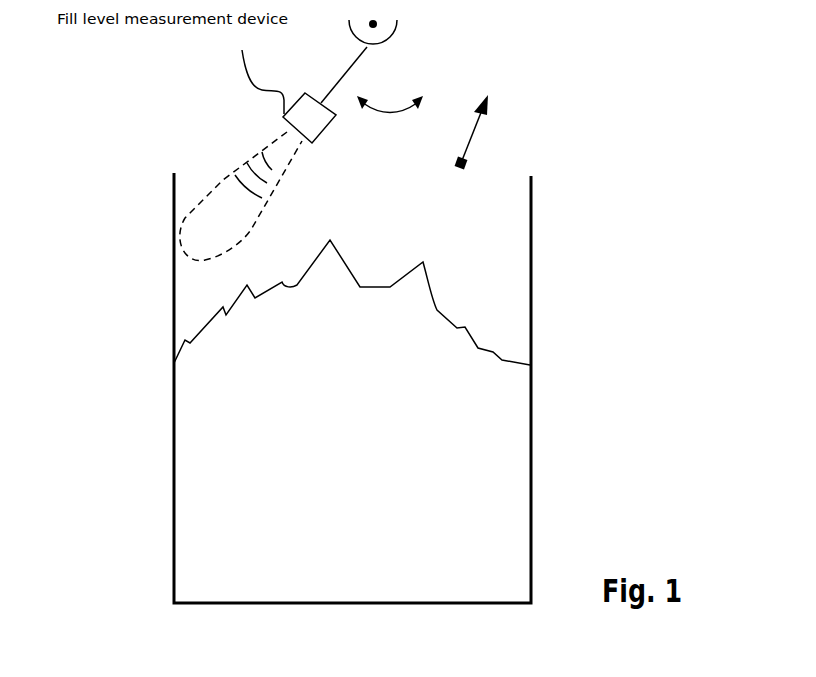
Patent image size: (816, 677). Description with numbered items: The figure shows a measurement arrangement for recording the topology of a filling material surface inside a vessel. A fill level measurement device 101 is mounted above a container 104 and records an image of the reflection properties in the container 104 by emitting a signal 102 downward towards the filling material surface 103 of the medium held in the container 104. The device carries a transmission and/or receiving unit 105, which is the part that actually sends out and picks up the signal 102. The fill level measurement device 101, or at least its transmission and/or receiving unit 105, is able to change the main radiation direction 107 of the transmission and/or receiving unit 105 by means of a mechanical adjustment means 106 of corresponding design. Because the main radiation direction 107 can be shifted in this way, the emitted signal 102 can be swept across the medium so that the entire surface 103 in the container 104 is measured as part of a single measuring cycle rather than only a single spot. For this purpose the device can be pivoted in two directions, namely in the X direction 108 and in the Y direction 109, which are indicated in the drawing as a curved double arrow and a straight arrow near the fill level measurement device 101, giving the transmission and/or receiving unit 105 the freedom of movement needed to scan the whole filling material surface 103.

The fill level measurement device 101 is at (307, 92).
The signal 102 is at (233, 172).
The filling material surface 103 is at (437, 304).
The container 104 is at (531, 467).
The transmission and/or receiving unit 105 is at (291, 130).
The mechanical adjustment means 106 is at (395, 32).
The main radiation direction 107 is at (200, 232).
The X direction 108 is at (404, 112).
The Y direction 109 is at (475, 133).